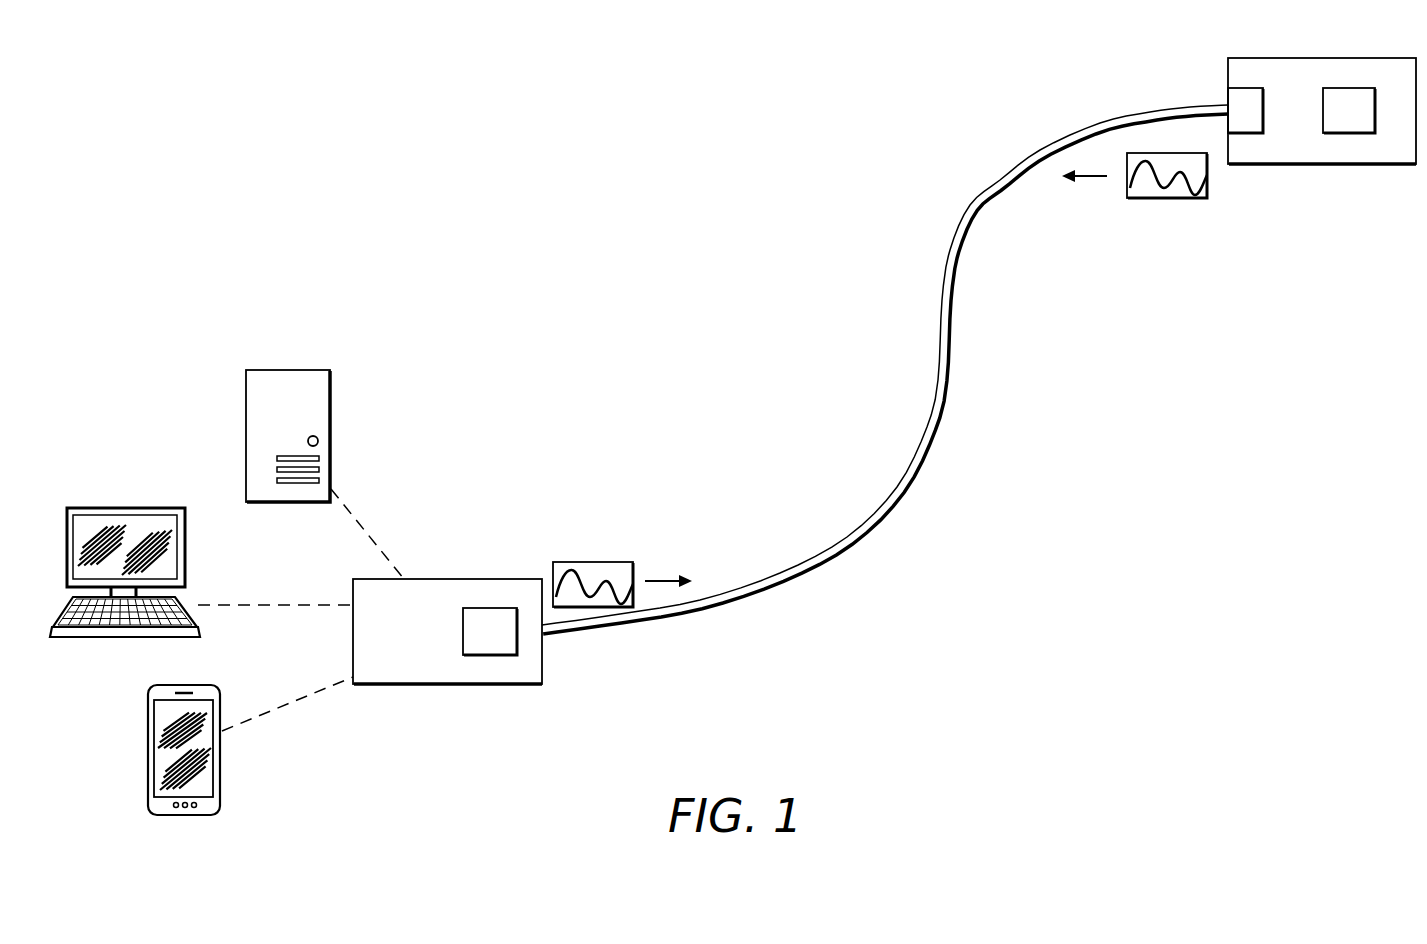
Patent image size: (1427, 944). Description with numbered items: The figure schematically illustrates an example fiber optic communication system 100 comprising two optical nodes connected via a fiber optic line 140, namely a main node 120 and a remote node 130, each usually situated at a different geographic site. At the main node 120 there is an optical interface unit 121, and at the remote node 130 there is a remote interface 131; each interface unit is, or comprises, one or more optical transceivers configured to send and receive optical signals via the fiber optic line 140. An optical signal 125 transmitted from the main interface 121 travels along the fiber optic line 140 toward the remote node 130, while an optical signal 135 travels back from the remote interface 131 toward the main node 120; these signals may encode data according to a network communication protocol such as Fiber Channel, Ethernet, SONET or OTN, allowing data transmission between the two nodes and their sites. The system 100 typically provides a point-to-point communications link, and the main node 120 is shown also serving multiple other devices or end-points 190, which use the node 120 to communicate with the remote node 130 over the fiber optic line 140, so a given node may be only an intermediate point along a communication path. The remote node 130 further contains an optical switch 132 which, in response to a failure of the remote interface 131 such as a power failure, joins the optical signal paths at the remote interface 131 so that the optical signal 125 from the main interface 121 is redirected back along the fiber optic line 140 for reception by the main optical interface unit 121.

The fiber optic communication system 100 is at (732, 116).
The end-points 190 is at (153, 508).
The main node 120 is at (512, 684).
The optical interface unit 121 is at (487, 608).
The optical signal 125 is at (600, 562).
The fiber optic line 140 is at (1032, 148).
The remote node 130 is at (1387, 164).
The remote interface 131 is at (1345, 88).
The optical switch 132 is at (1243, 88).
The optical signal 135 is at (1178, 198).